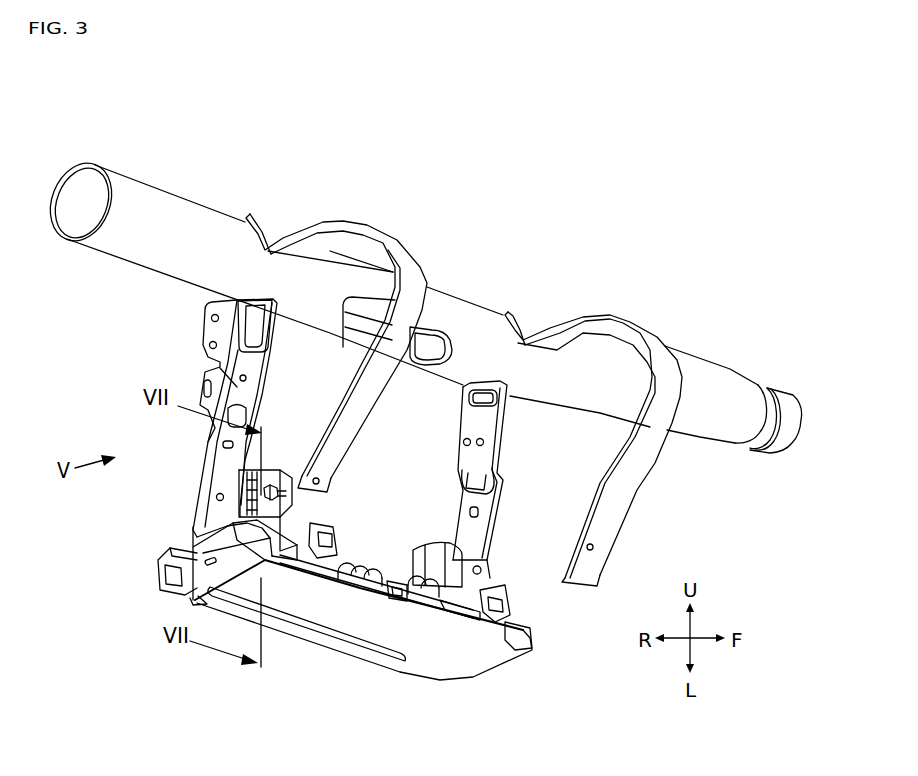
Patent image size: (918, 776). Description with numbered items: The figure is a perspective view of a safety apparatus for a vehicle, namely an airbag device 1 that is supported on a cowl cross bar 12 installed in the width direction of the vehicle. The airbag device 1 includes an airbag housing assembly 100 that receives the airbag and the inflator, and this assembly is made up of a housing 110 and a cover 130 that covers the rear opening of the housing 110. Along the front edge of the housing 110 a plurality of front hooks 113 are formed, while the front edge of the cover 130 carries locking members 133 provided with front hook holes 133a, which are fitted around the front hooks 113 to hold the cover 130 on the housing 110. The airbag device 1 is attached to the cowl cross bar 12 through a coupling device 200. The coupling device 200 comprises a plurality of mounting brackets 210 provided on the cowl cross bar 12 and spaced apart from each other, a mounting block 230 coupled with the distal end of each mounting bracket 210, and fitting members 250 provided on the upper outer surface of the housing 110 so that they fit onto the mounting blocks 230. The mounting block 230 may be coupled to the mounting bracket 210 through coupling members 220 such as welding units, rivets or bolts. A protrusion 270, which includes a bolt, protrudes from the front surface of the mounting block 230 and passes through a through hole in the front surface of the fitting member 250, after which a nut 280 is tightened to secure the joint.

The airbag device 1 is at (532, 511).
The cowl cross bar 12 is at (165, 205).
The airbag housing assembly 100 is at (341, 569).
The housing 110 is at (533, 621).
The front hooks 113 is at (413, 605).
The cover 130 is at (489, 660).
The locking members 133 is at (400, 605).
The front hook holes 133a is at (393, 570).
The coupling device 200 is at (184, 407).
The mounting brackets 210 is at (212, 368).
The coupling members 220 is at (216, 497).
The mounting block 230 is at (265, 512).
The fitting member 250 is at (195, 538).
The protrusion 270 is at (262, 490).
The nut 280 is at (221, 468).